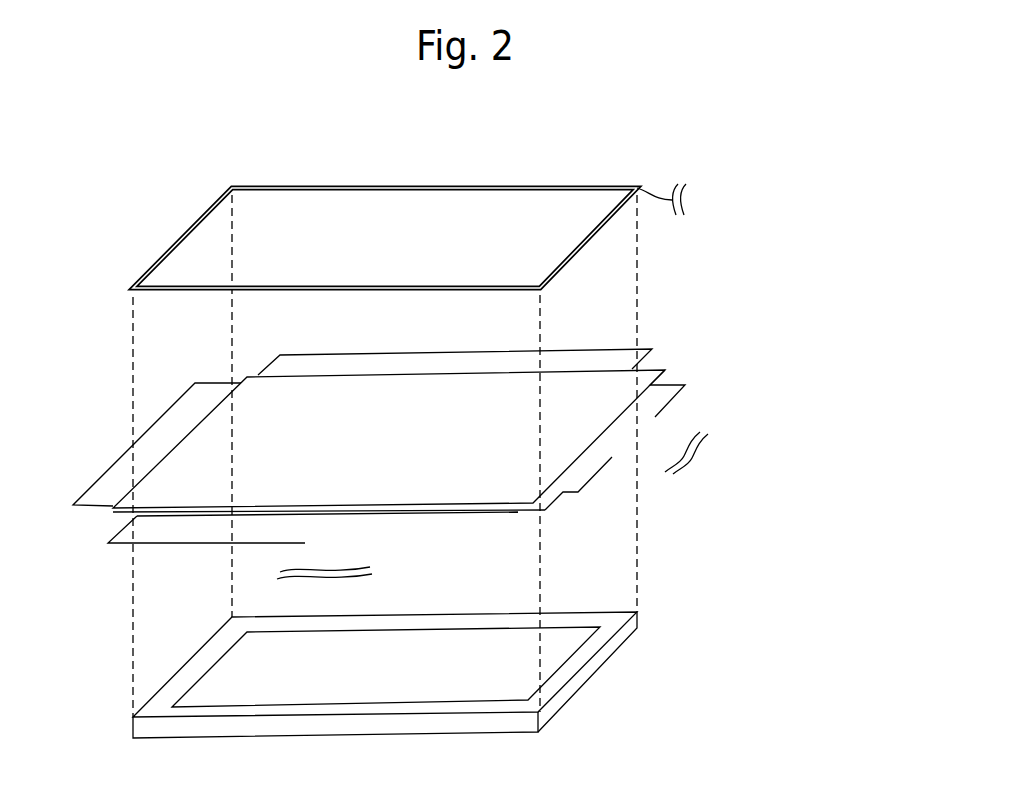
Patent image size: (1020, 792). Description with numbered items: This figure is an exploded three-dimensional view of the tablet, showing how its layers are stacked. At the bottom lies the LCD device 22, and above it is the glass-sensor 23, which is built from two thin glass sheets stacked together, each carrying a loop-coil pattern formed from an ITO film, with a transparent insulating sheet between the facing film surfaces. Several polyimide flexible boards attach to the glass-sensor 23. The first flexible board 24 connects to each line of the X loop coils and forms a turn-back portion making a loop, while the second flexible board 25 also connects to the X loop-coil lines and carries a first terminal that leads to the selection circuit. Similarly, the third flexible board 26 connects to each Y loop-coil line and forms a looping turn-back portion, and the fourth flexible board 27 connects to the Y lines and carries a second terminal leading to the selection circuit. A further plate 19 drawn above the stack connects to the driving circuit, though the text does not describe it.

The transparent electrode plate 19 is at (515, 185).
The LCD device 22 is at (563, 695).
The glass-sensor 23 is at (388, 458).
The first flexible board 24 is at (597, 352).
The second flexible board 25 is at (120, 528).
The third flexible board 26 is at (105, 487).
The fourth flexible board 27 is at (678, 385).